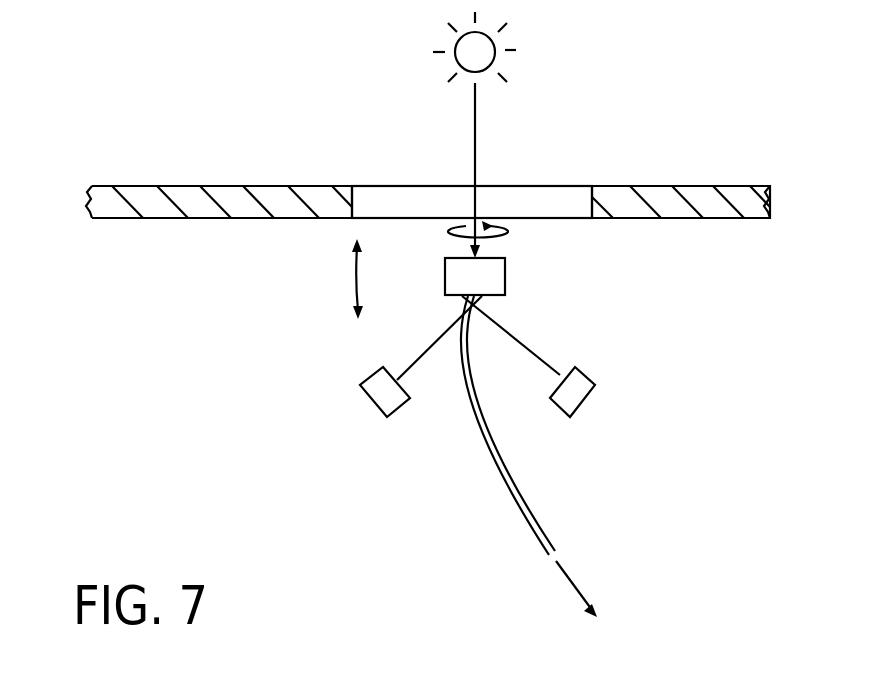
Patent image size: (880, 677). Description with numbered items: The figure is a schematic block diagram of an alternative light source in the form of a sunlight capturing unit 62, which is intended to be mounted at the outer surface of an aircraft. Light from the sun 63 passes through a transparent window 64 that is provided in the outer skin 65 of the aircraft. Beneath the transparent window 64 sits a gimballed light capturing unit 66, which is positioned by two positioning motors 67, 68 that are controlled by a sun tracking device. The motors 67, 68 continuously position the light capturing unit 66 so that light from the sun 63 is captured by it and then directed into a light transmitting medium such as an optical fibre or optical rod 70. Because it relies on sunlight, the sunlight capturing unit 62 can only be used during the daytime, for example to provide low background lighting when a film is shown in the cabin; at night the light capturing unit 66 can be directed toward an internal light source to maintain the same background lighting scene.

The sunlight capturing unit 62 is at (374, 488).
The sun 63 is at (485, 57).
The transparent window 64 is at (378, 195).
The outer skin 65 is at (660, 192).
The gimballed light capturing unit 66 is at (505, 278).
The positioning motor 67 is at (562, 395).
The positioning motor 68 is at (372, 393).
The optical fibre or optical rod 70 is at (497, 468).